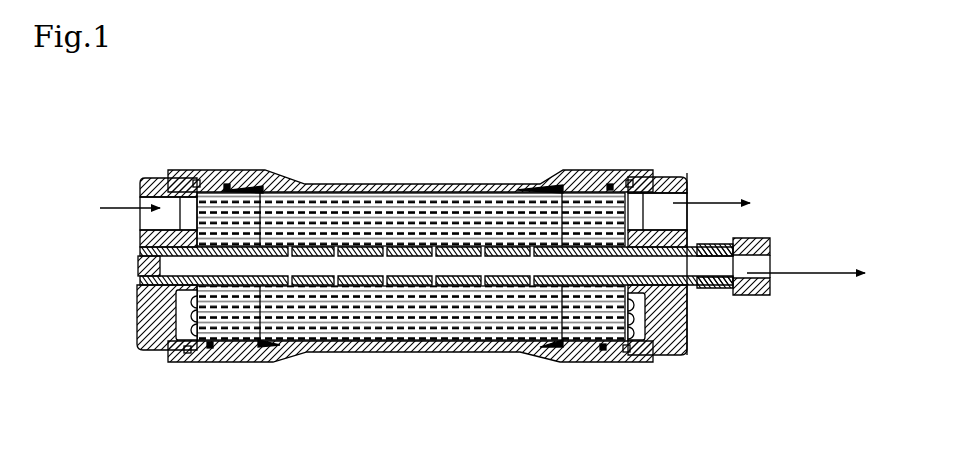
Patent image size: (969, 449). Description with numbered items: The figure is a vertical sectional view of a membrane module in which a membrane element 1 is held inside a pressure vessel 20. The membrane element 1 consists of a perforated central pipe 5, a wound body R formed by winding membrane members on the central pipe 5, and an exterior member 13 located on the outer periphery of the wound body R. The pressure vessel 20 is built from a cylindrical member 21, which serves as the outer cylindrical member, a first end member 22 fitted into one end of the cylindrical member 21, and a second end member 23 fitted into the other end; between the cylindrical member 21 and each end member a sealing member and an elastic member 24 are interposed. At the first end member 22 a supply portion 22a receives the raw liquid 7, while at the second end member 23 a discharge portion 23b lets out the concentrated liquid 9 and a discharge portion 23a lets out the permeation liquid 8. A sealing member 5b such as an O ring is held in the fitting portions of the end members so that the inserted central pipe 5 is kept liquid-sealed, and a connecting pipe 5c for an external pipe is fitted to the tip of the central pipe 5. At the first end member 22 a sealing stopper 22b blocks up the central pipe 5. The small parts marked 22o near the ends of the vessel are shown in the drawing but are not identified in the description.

The membrane element 1 is at (473, 257).
The pressure vessel 20 is at (378, 166).
The cylindrical member 21 is at (250, 362).
The first end member 22 is at (139, 264).
The supply portion 22a is at (143, 218).
The sealing stopper 22b is at (138, 268).
The O-ring 22o is at (216, 348).
The second end member 23 is at (684, 287).
The discharge portion 23a is at (785, 265).
The discharge portion 23b is at (688, 222).
The elastic member 24 is at (187, 362).
The exterior member 13 is at (388, 351).
The central pipe 5 is at (473, 267).
The sealing member 5b is at (688, 295).
The connecting pipe 5c is at (762, 238).
The wound body R is at (443, 351).
The raw liquid 7 is at (125, 208).
The permeation liquid 8 is at (838, 270).
The concentrated liquid 9 is at (705, 200).